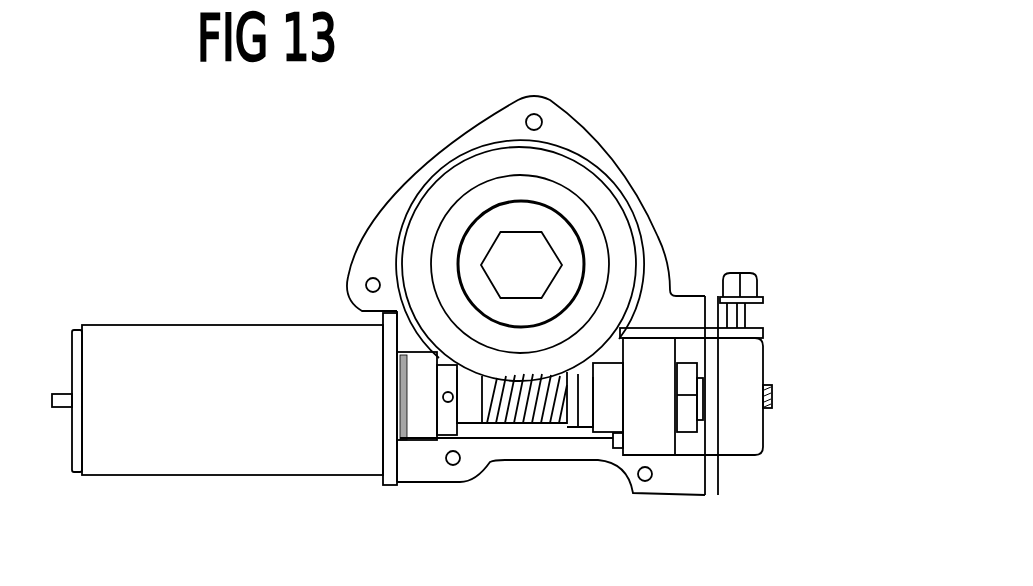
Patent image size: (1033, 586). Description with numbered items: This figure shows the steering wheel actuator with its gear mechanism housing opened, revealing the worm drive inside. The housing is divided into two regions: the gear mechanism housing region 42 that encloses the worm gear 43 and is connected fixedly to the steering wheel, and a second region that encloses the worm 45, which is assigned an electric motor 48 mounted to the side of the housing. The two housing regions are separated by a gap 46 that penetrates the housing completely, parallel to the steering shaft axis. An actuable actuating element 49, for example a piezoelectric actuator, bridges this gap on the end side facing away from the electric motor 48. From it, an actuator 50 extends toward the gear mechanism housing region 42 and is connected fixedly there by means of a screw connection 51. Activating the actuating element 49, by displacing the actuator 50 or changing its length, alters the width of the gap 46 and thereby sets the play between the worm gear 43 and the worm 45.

The gear mechanism housing region 42 is at (622, 186).
The worm gear 43 is at (553, 165).
The worm 45 is at (523, 405).
The gap 46 is at (652, 333).
The electric motor 48 is at (186, 454).
The actuating element 49 is at (735, 372).
The actuator 50 is at (743, 323).
The screw connection 51 is at (753, 290).